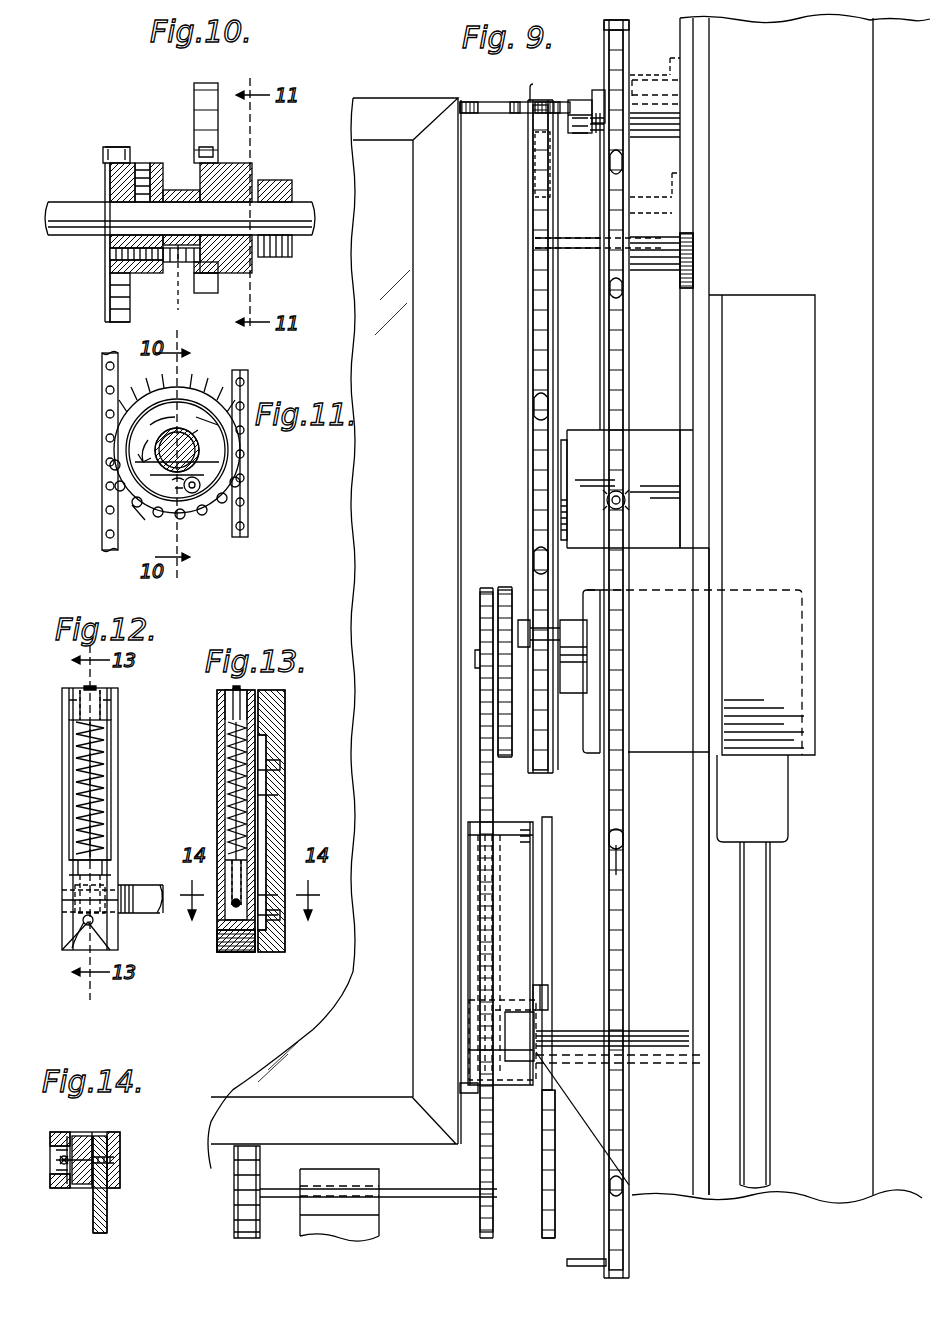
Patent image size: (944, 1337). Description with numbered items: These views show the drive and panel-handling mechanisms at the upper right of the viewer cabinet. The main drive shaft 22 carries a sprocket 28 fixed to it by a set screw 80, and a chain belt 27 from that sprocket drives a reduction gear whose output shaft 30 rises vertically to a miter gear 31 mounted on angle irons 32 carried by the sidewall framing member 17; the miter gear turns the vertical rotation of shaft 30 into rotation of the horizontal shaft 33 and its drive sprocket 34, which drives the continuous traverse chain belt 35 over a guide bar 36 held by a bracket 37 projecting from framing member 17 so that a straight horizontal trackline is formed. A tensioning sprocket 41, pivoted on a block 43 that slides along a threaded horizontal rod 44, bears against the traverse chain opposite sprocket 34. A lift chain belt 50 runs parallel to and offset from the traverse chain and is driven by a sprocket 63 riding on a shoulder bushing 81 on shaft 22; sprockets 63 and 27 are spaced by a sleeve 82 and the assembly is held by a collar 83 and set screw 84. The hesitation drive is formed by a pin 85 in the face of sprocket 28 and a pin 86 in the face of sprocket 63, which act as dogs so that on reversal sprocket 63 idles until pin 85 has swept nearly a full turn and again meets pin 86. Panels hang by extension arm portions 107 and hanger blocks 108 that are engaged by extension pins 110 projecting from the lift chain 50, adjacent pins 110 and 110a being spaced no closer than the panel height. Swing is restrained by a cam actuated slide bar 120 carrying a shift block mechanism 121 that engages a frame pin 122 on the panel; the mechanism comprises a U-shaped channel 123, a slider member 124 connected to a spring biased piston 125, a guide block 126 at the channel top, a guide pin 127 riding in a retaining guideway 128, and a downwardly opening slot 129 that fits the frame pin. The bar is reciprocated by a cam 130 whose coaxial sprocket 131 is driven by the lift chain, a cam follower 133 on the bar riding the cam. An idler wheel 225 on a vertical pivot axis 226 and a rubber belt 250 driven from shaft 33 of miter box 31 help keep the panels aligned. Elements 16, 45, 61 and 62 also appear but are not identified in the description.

In FIG. 9, the frame 16 is at (814, 139).
In FIG. 9, the sidewall framing member 17 is at (698, 198).
In FIG. 10, the main drive shaft 22 is at (73, 202).
In FIG. 10, the chain belt 27 is at (107, 145).
In FIG. 11, the chain belt 27 is at (144, 387).
In FIG. 10, the sprocket 28 is at (128, 147).
In FIG. 9, the shaft 30 is at (770, 980).
In FIG. 9, the miter gear 31 is at (665, 753).
In FIG. 9, the angle irons 32 is at (796, 545).
In FIG. 9, the shaft 33 is at (577, 695).
In FIG. 9, the drive sprocket 34 is at (550, 760).
In FIG. 9, the traverse chain belt 35 is at (528, 363).
In FIG. 9, the guide bar 36 is at (528, 152).
In FIG. 9, the bracket 37 is at (573, 218).
In FIG. 9, the sprocket 41 is at (541, 405).
In FIG. 9, the block 43 is at (646, 430).
In FIG. 9, the threaded horizontal rod 44 is at (624, 510).
In FIG. 9, the block 45 is at (531, 88).
In FIG. 11, the lift chain belt 50 is at (248, 385).
In FIG. 9, the lift chain belt 50 is at (617, 374).
In FIG. 9, the chain end cap 61 is at (629, 32).
In FIG. 9, the shaft 62 is at (604, 314).
In FIG. 10, the sprocket 63 is at (218, 150).
In FIG. 11, the sprocket 63 is at (205, 393).
In FIG. 10, the set screw 80 is at (140, 164).
In FIG. 10, the shoulder bushing 81 is at (242, 173).
In FIG. 11, the shoulder bushing 81 is at (152, 452).
In FIG. 10, the sleeve 82 is at (175, 190).
In FIG. 11, the sleeve 82 is at (234, 459).
In FIG. 10, the collar 83 is at (288, 190).
In FIG. 10, the set screw 84 is at (270, 258).
In FIG. 10, the pin 85 is at (172, 263).
In FIG. 11, the pin 85 is at (144, 512).
In FIG. 10, the pin 86 is at (185, 284).
In FIG. 11, the pin 86 is at (188, 495).
In FIG. 9, the extension arm 107 is at (478, 102).
In FIG. 9, the hanger block 108 is at (580, 100).
In FIG. 9, the extension pins 110 is at (594, 134).
In FIG. 9, the extension pin 110a is at (580, 1267).
In FIG. 12, the slide bar 120 is at (150, 908).
In FIG. 13, the slide bar 120 is at (268, 930).
In FIG. 14, the slide bar 120 is at (107, 1214).
In FIG. 9, the slide bar 120 is at (520, 1063).
In FIG. 12, the shift block mechanism 121 is at (124, 757).
In FIG. 14, the shift block mechanism 121 is at (131, 1150).
In FIG. 9, the shift block mechanism 121 is at (533, 822).
In FIG. 9, the frame pin 122 is at (465, 1081).
In FIG. 12, the U-shaped channel 123 is at (112, 790).
In FIG. 13, the U-shaped channel 123 is at (265, 952).
In FIG. 14, the U-shaped channel 123 is at (83, 1135).
In FIG. 9, the U-shaped channel 123 is at (463, 892).
In FIG. 12, the slider member 124 is at (105, 871).
In FIG. 13, the slider member 124 is at (232, 860).
In FIG. 14, the slider member 124 is at (52, 1166).
In FIG. 12, the spring biased piston 125 is at (94, 686).
In FIG. 13, the spring biased piston 125 is at (242, 685).
In FIG. 12, the guide block 126 is at (82, 686).
In FIG. 13, the guide block 126 is at (233, 688).
In FIG. 12, the guide pin 127 is at (60, 904).
In FIG. 13, the guide pin 127 is at (230, 910).
In FIG. 14, the guide pin 127 is at (75, 1202).
In FIG. 12, the retaining guideway 128 is at (68, 803).
In FIG. 13, the retaining guideway 128 is at (232, 813).
In FIG. 12, the slot 129 is at (75, 948).
In FIG. 13, the slot 129 is at (238, 954).
In FIG. 14, the slot 129 is at (45, 1157).
In FIG. 9, the slot 129 is at (469, 1050).
In FIG. 9, the cam 130 is at (552, 834).
In FIG. 9, the sprocket 131 is at (618, 835).
In FIG. 9, the cam follower 133 is at (548, 992).
In FIG. 9, the idler wheel 225 is at (681, 98).
In FIG. 9, the vertical pivot axis 226 is at (681, 107).
In FIG. 9, the rubber belt 250 is at (248, 1238).